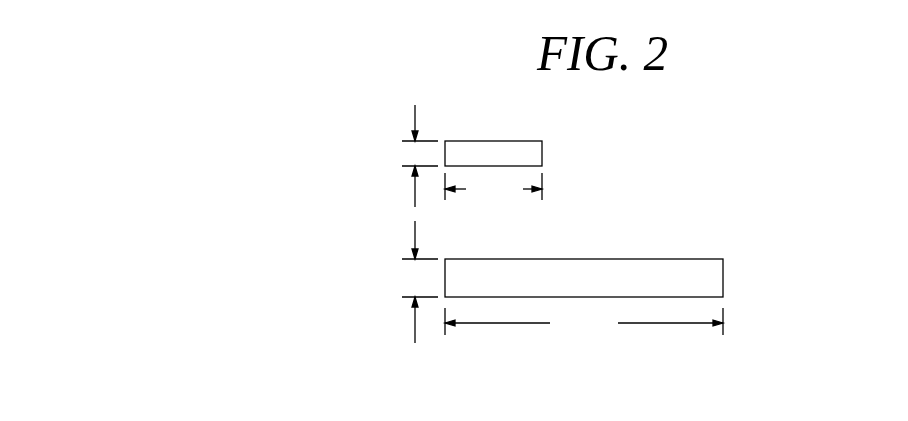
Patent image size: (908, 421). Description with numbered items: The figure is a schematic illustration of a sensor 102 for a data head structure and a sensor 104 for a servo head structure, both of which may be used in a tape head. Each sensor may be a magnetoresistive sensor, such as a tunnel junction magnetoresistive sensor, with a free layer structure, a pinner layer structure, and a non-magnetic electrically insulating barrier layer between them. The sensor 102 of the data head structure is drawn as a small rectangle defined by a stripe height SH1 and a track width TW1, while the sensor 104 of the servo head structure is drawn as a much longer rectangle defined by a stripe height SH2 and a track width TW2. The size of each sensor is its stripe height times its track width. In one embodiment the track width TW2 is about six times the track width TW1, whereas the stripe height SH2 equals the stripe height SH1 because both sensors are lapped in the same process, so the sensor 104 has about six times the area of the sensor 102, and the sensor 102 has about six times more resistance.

The sensor for a data head structure 102 is at (580, 149).
The sensor for a servo head structure 104 is at (754, 288).
The stripe height SH1 is at (387, 156).
The track width TW1 is at (493, 188).
The stripe height SH2 is at (387, 282).
The track width TW2 is at (584, 323).